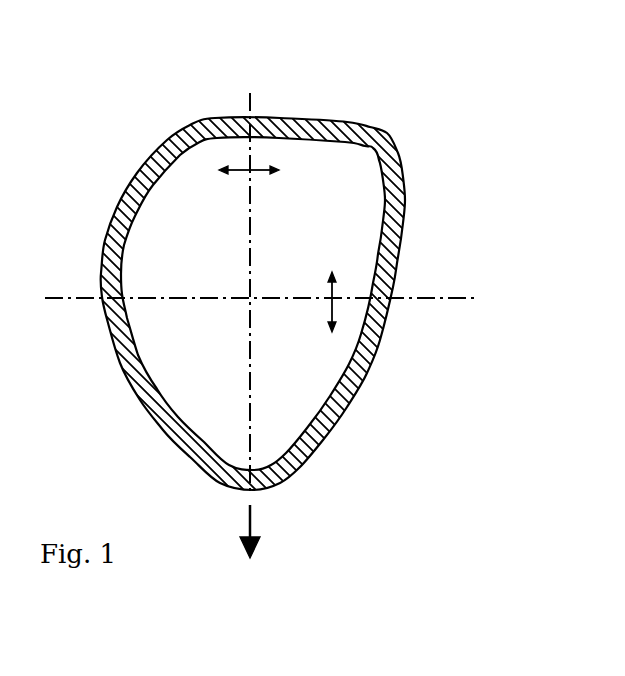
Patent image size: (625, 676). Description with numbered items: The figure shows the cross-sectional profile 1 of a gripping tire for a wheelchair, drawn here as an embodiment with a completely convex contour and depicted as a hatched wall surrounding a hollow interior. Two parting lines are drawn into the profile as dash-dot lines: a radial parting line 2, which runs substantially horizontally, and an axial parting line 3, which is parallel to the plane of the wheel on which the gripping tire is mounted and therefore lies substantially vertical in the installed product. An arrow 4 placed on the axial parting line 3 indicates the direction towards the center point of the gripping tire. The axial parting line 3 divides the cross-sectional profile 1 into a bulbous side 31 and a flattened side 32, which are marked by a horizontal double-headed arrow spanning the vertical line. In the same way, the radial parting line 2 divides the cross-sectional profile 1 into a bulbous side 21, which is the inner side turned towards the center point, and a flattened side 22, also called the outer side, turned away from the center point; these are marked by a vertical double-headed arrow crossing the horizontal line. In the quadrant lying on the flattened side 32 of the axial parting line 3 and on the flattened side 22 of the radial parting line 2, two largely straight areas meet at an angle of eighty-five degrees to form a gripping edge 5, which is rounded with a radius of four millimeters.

The cross-sectional profile 1 is at (328, 68).
The radial parting line 2 is at (470, 297).
The axial parting line 3 is at (250, 95).
The arrow 4 is at (254, 545).
The gripping edge 5 is at (381, 132).
The bulbous side 21 is at (332, 334).
The flattened side 22 is at (332, 269).
The bulbous side 31 is at (217, 173).
The flattened side 32 is at (282, 173).